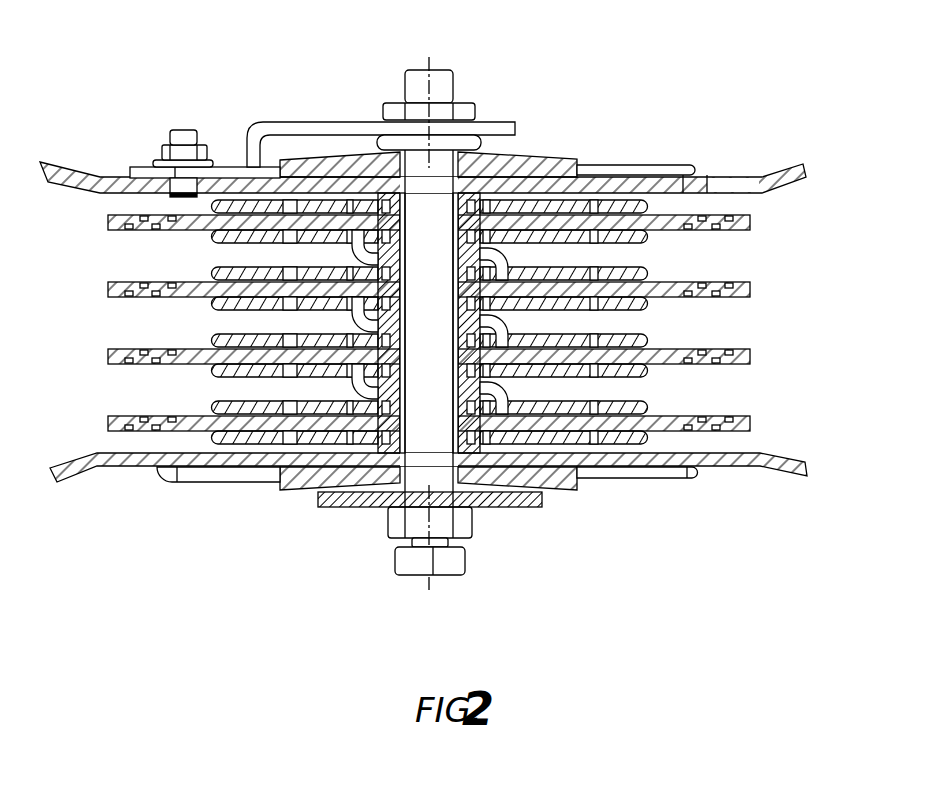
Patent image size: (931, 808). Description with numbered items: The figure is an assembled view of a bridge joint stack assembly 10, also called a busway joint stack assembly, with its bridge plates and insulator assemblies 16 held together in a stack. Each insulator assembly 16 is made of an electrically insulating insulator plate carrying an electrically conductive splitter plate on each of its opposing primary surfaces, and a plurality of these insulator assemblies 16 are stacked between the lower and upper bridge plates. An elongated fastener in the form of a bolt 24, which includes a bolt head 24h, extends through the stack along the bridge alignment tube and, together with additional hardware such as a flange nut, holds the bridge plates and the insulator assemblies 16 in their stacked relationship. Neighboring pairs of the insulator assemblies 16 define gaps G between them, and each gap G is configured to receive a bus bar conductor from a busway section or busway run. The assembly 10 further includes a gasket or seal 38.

The bridge joint stack assembly 10 is at (822, 143).
The insulator assembly 16 is at (773, 221).
The gap G is at (707, 256).
The bolt 24 is at (498, 547).
The bolt head 24h is at (482, 582).
The gasket or seal 38 is at (542, 496).